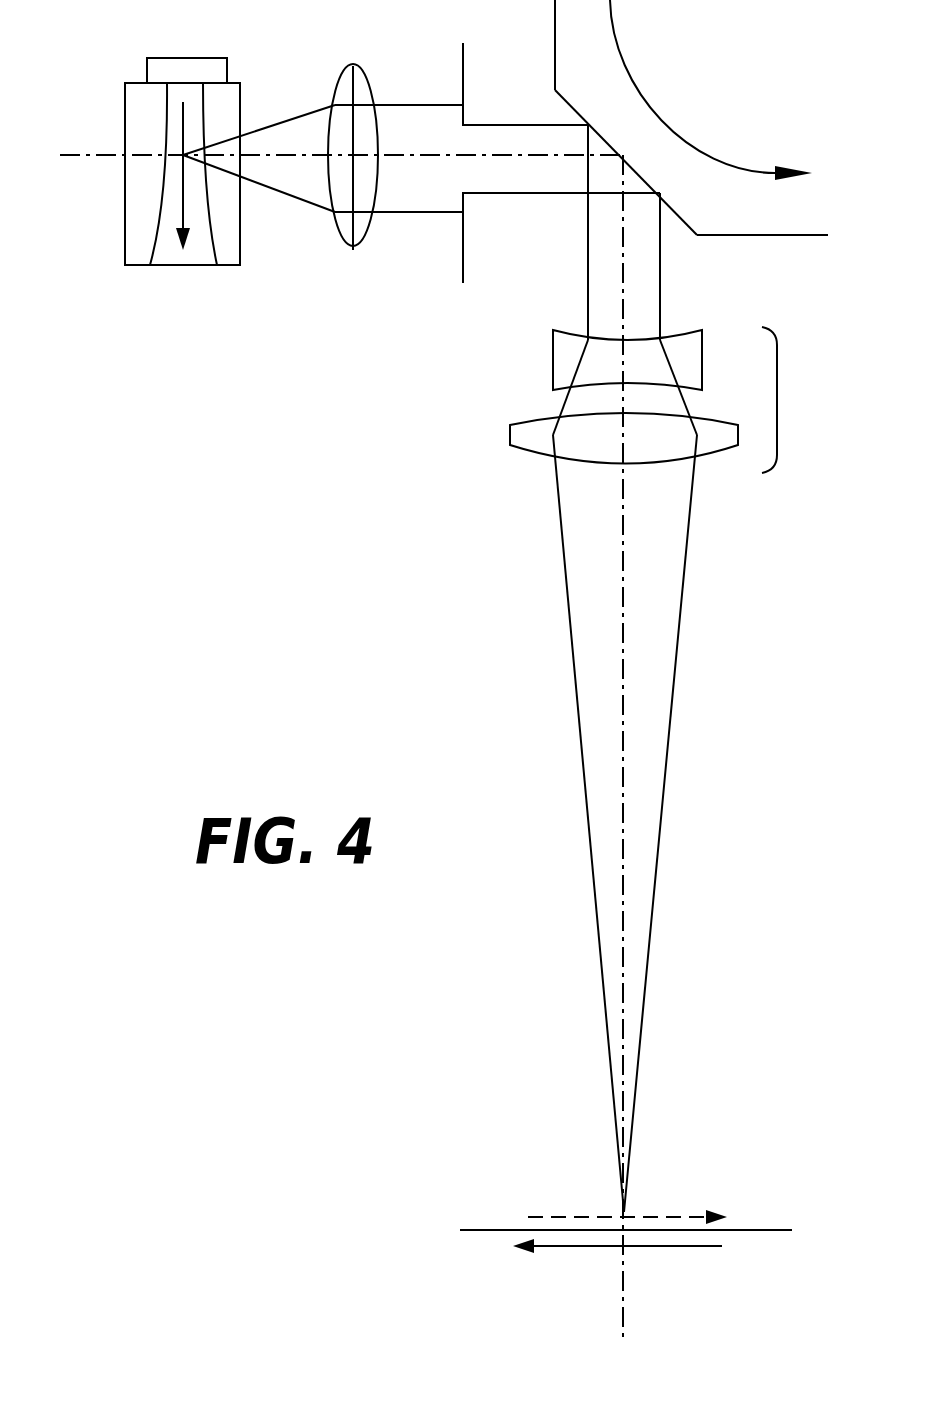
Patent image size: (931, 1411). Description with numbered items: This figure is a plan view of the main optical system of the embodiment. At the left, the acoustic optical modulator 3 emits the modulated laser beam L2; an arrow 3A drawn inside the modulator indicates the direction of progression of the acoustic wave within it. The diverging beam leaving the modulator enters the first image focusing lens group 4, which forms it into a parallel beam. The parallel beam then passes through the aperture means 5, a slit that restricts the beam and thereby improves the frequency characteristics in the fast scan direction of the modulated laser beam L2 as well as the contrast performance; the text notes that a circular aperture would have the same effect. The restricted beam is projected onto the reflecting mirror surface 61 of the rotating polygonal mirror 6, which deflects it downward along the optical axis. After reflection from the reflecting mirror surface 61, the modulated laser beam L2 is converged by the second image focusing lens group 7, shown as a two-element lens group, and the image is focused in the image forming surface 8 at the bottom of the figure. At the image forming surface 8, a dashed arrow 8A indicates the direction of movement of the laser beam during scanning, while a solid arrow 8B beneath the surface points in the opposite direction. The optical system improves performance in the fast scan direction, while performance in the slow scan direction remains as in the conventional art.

The acoustic optical modulator 3 is at (173, 255).
The arrow indicating direction of progression of the acoustic wave 3A is at (187, 122).
The first image focusing lens group 4 is at (352, 252).
The modulated laser beam L2 is at (418, 182).
The aperture means 5 is at (556, 181).
The rotating polygonal mirror 6 is at (770, 235).
The reflecting mirror surface 61 is at (567, 106).
The second image focusing lens group 7 is at (660, 400).
The image forming surface 8 is at (773, 1230).
The arrow indicating direction of movement of the laser beam 8A is at (668, 1217).
The reproducing direction 8B is at (670, 1246).